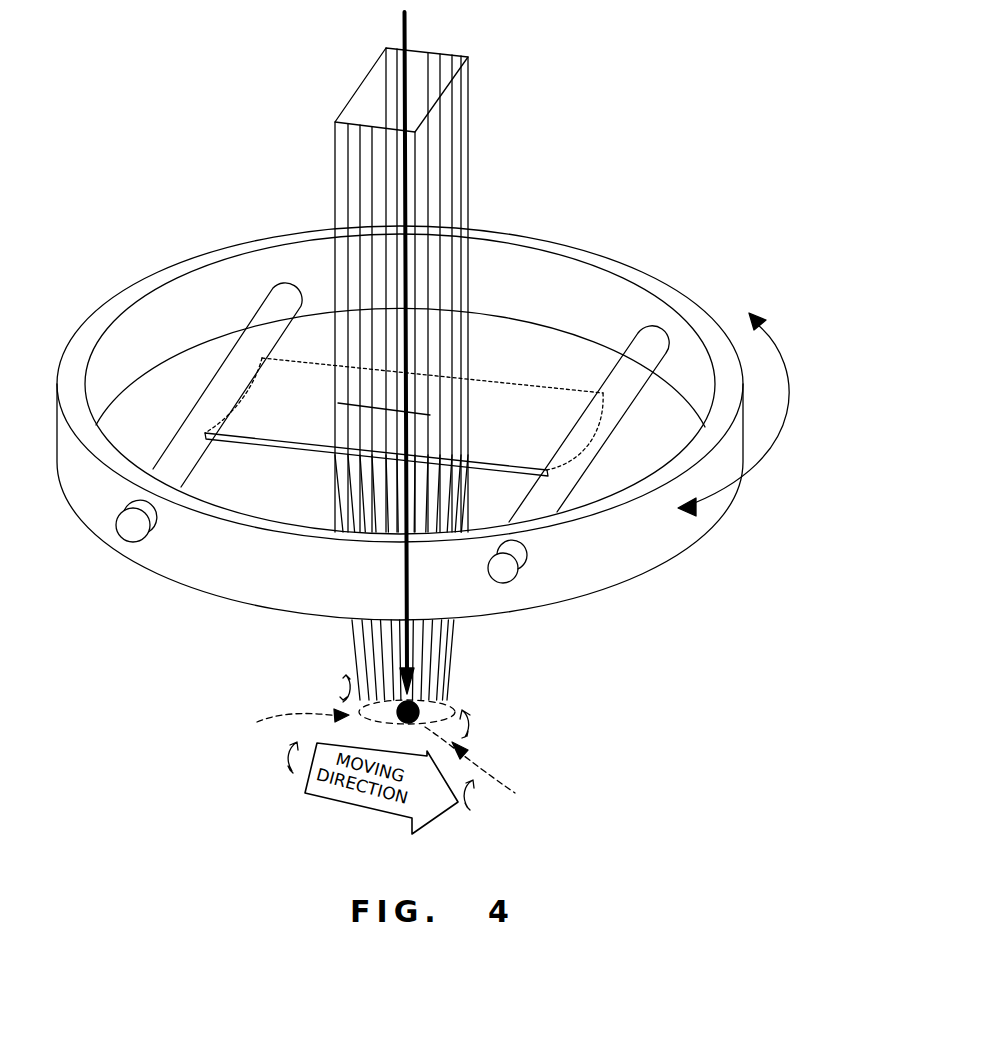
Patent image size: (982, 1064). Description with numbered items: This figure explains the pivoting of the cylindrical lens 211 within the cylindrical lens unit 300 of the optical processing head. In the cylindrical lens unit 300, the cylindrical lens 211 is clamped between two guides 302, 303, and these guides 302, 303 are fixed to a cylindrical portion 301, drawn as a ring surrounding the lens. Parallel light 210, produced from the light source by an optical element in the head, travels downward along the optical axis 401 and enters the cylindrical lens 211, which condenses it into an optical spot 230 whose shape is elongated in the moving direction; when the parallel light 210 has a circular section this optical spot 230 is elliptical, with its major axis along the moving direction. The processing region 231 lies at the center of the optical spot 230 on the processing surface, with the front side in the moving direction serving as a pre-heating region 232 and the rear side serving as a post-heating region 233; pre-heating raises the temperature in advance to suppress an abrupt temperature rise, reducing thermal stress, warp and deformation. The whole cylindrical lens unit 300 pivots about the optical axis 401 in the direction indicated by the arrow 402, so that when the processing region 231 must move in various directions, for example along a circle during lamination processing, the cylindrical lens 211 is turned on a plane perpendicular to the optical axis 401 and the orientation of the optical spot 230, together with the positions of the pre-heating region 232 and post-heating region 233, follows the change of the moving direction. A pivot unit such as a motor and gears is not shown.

The cylindrical lens unit 300 is at (410, 397).
The cylindrical portion 301 is at (134, 306).
The guide 302 is at (178, 447).
The guide 303 is at (638, 383).
The parallel light 210 is at (432, 182).
The cylindrical lens 211 is at (535, 403).
The optical axis 401 is at (408, 42).
The arrow 402 is at (787, 370).
The optical spot 230 is at (455, 708).
The processing region 231 is at (423, 707).
The pre-heating region 232 is at (426, 762).
The post-heating region 233 is at (277, 709).